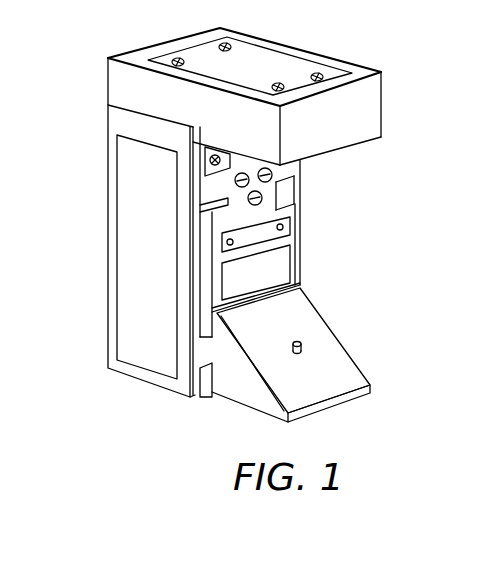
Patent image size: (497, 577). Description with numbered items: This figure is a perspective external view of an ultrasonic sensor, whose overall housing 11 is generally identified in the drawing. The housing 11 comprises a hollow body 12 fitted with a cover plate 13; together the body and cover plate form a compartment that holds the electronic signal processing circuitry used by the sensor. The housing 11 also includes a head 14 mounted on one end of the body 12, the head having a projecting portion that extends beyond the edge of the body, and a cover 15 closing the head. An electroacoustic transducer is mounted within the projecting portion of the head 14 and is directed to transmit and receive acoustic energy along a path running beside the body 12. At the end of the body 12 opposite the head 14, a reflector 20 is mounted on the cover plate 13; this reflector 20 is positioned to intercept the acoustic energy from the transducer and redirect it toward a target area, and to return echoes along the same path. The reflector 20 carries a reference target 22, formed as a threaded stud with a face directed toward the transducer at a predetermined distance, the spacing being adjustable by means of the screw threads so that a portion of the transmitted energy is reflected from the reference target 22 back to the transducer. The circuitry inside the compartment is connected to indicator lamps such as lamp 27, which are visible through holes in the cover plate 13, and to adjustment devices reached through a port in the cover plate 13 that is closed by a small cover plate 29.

The housing 11 is at (310, 236).
The hollow body 12 is at (125, 251).
The cover plate 13 is at (280, 278).
The head 14 is at (268, 96).
The cover 15 is at (261, 62).
The reflector 20 is at (304, 355).
The reference target 22 is at (330, 334).
The indicator lamp 27 is at (290, 186).
The cover plate 29 is at (284, 228).